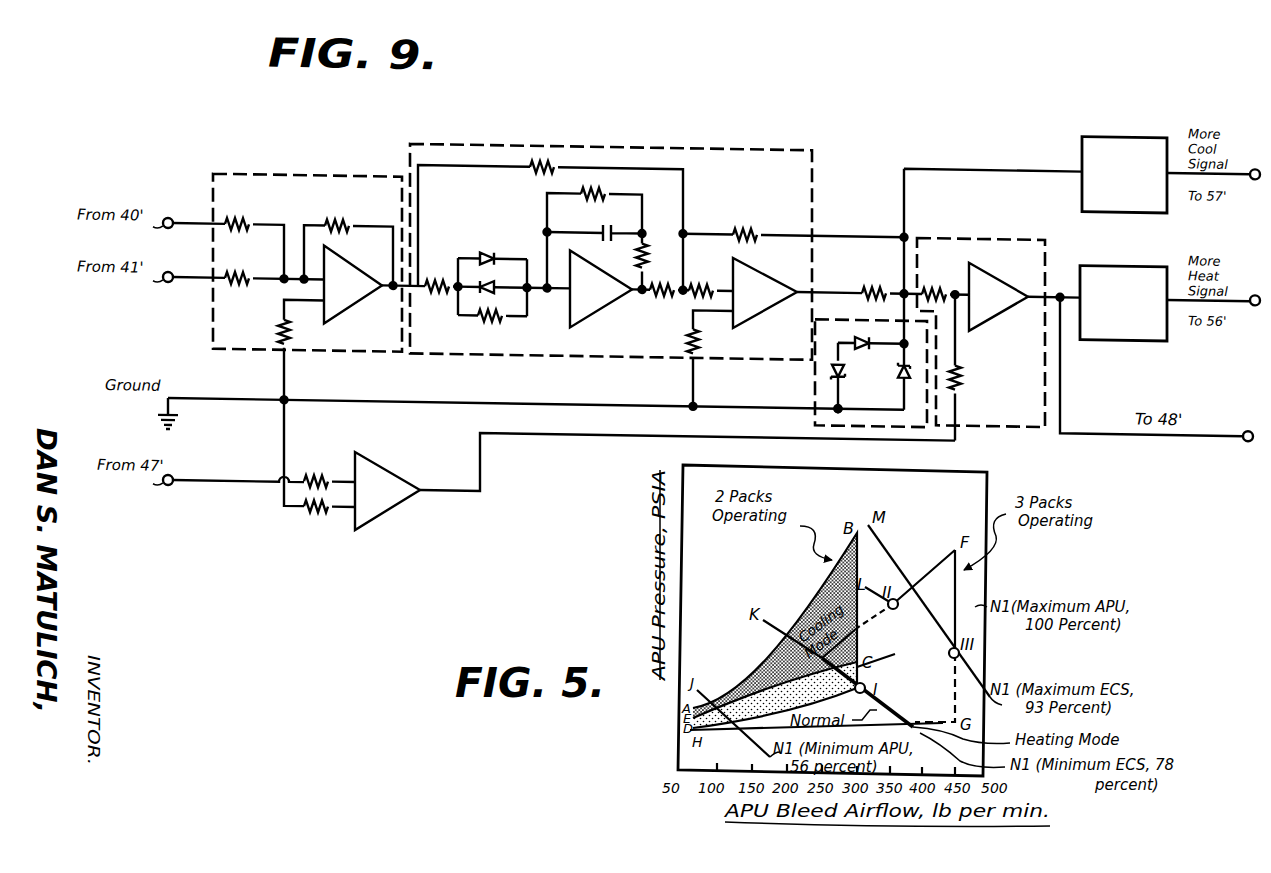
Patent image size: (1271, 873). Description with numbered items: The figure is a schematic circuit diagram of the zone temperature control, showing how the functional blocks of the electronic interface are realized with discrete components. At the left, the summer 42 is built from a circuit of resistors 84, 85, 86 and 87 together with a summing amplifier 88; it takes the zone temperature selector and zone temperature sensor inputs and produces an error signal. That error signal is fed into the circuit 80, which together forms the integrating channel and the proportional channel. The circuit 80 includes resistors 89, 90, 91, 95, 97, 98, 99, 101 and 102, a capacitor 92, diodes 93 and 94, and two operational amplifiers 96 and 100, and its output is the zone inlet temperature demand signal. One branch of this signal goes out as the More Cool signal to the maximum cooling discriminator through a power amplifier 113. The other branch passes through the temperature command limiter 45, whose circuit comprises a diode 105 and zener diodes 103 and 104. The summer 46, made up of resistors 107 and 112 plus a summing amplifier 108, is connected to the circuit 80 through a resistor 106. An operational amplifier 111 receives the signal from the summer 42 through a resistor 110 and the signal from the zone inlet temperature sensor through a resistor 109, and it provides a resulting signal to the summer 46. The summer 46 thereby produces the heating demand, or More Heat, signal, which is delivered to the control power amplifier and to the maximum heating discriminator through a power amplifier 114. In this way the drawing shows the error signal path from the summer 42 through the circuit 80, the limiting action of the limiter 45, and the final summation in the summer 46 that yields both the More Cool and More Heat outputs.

The summer 42 is at (348, 171).
The circuit 80 is at (816, 196).
The zone inlet temperature demand limiter 45 is at (812, 384).
The summer 46 is at (1022, 224).
The resistor 84 is at (279, 330).
The resistor 85 is at (256, 206).
The resistor 86 is at (256, 263).
The resistor 87 is at (341, 218).
The summing amplifier 88 is at (352, 292).
The resistor 89 is at (433, 276).
The resistor 90 is at (530, 165).
The resistor 91 is at (612, 187).
The capacitor 92 is at (612, 221).
The diode 93 is at (490, 252).
The diode 94 is at (503, 271).
The resistor 95 is at (497, 314).
The operational amplifier 96 is at (598, 294).
The resistor 97 is at (645, 249).
The resistor 98 is at (655, 289).
The resistor 99 is at (698, 277).
The operational amplifier 100 is at (766, 292).
The resistor 101 is at (742, 221).
The resistor 102 is at (702, 335).
The zener diode 103 is at (842, 372).
The zener diode 104 is at (897, 359).
The diode 105 is at (856, 332).
The resistor 106 is at (876, 278).
The resistor 107 is at (935, 277).
The summing amplifier 108 is at (1002, 292).
The resistor 109 is at (320, 474).
The resistor 110 is at (318, 511).
The operational amplifier 111 is at (388, 495).
The resistor 112 is at (959, 368).
The power amplifier 113 is at (1136, 192).
The power amplifier 114 is at (1134, 321).